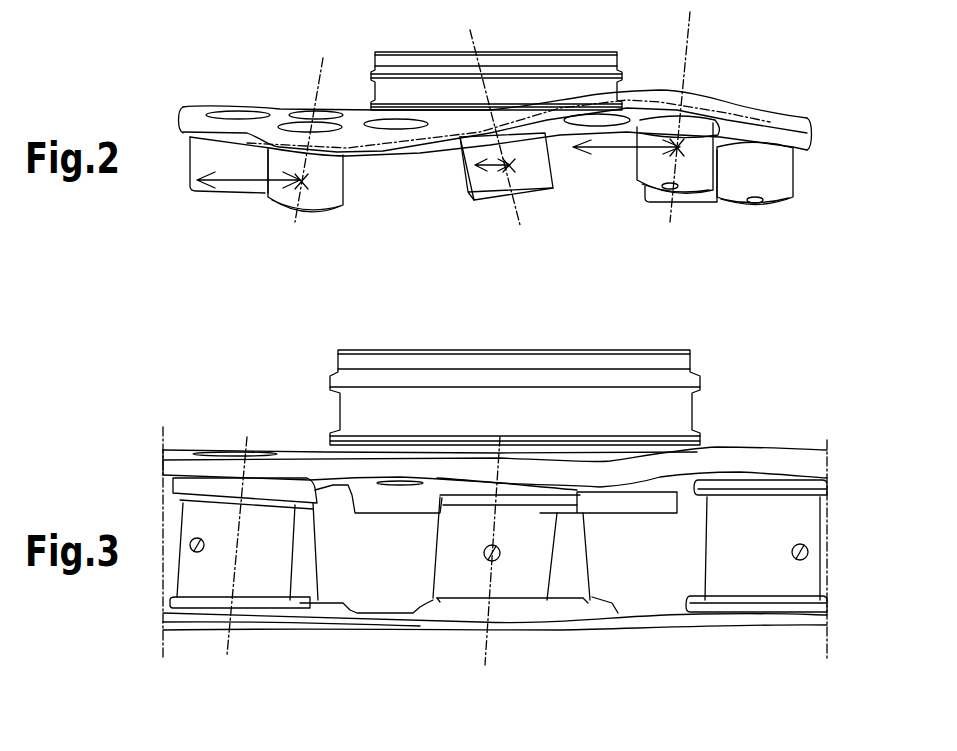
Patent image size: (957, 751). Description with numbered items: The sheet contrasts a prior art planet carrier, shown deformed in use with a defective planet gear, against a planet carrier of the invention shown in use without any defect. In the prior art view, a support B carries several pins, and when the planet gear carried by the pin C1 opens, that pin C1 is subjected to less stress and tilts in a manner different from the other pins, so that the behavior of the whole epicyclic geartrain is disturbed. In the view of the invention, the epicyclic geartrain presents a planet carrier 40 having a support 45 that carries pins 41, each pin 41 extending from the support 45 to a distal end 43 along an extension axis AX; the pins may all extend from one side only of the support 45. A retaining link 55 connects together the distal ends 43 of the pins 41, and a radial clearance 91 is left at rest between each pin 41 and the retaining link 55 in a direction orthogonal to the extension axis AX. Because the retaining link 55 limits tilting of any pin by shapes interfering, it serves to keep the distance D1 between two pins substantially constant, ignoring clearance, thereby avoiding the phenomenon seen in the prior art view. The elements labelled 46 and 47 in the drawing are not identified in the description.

In FIG. 2, the support B is at (492, 100).
In FIG. 2, the pin carrying the damaged planet gear C1 is at (556, 192).
In FIG. 3, the planet carrier 40 is at (535, 523).
In FIG. 3, the pin 41 is at (450, 560).
In FIG. 3, the distal end 43 is at (548, 586).
In FIG. 3, the support 45 is at (773, 457).
In FIG. 3, the inner link plate 46 is at (667, 480).
In FIG. 3, the outer plate upper edge 47 is at (737, 446).
In FIG. 3, the retaining link 55 is at (590, 620).
In FIG. 3, the radial clearance 91 is at (440, 598).
In FIG. 3, the extension axis AX is at (487, 657).
In FIG. 3, the distance between two pins D1 is at (483, 658).